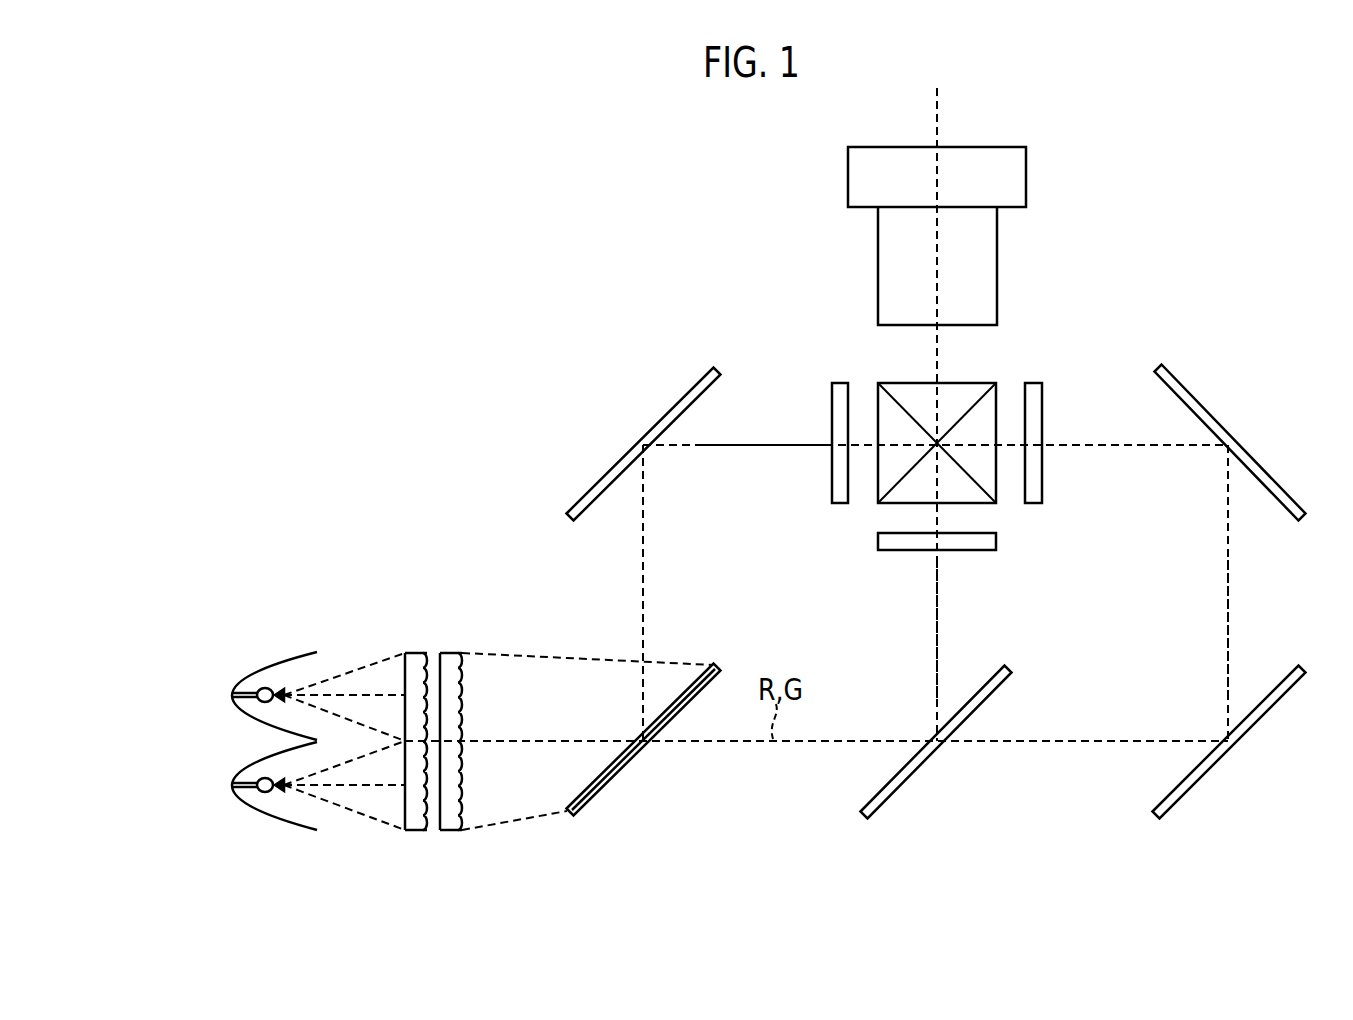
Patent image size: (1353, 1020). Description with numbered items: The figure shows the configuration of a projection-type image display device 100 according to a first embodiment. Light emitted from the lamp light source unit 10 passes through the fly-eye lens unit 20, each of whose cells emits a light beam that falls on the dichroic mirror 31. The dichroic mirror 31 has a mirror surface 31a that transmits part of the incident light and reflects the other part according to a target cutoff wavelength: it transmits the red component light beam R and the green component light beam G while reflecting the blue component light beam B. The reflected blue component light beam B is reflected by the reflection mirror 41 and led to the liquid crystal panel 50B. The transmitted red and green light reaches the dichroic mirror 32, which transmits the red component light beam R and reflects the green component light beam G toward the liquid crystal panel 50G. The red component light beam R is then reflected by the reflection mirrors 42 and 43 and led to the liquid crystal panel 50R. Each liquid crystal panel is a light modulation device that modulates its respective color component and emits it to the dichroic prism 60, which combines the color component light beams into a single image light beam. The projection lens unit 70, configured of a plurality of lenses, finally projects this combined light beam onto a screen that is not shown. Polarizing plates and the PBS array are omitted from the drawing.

The projection-type image display device 100 is at (1205, 263).
The lamp light source unit 10 is at (224, 648).
The fly-eye lens unit 20 is at (463, 846).
The dichroic mirror 31 is at (600, 783).
The mirror surface 31a is at (683, 688).
The dichroic mirror 32 is at (895, 787).
The reflection mirror 41 is at (681, 405).
The reflection mirror 42 is at (1200, 785).
The reflection mirror 43 is at (1285, 492).
The liquid crystal panel 50B is at (840, 383).
The liquid crystal panel 50R is at (1038, 383).
The liquid crystal panel 50G is at (1000, 540).
The dichroic prism 60 is at (975, 383).
The projection lens unit 70 is at (978, 262).
The blue component light beam B is at (758, 443).
The green component light beam G is at (940, 590).
The red component light beam R is at (1232, 590).